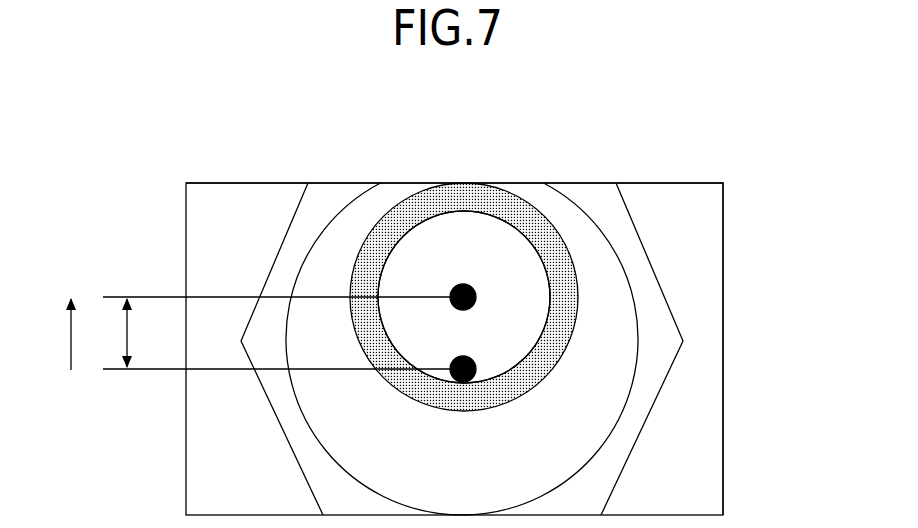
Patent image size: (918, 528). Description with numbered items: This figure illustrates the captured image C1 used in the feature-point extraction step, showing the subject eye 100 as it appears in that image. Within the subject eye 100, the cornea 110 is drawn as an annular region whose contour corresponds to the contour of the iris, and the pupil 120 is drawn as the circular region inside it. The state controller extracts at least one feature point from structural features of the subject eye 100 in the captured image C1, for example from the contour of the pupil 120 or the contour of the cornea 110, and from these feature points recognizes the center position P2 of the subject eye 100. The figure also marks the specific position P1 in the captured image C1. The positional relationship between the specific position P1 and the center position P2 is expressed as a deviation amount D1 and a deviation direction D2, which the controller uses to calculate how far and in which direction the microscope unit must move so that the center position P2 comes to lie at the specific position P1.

The subject eye 100 is at (598, 315).
The cornea 110 is at (510, 187).
The pupil 120 is at (467, 207).
The captured image C1 is at (723, 202).
The specific position P1 is at (474, 366).
The center position P2 is at (474, 289).
The deviation amount D1 is at (109, 333).
The deviation direction D2 is at (53, 334).